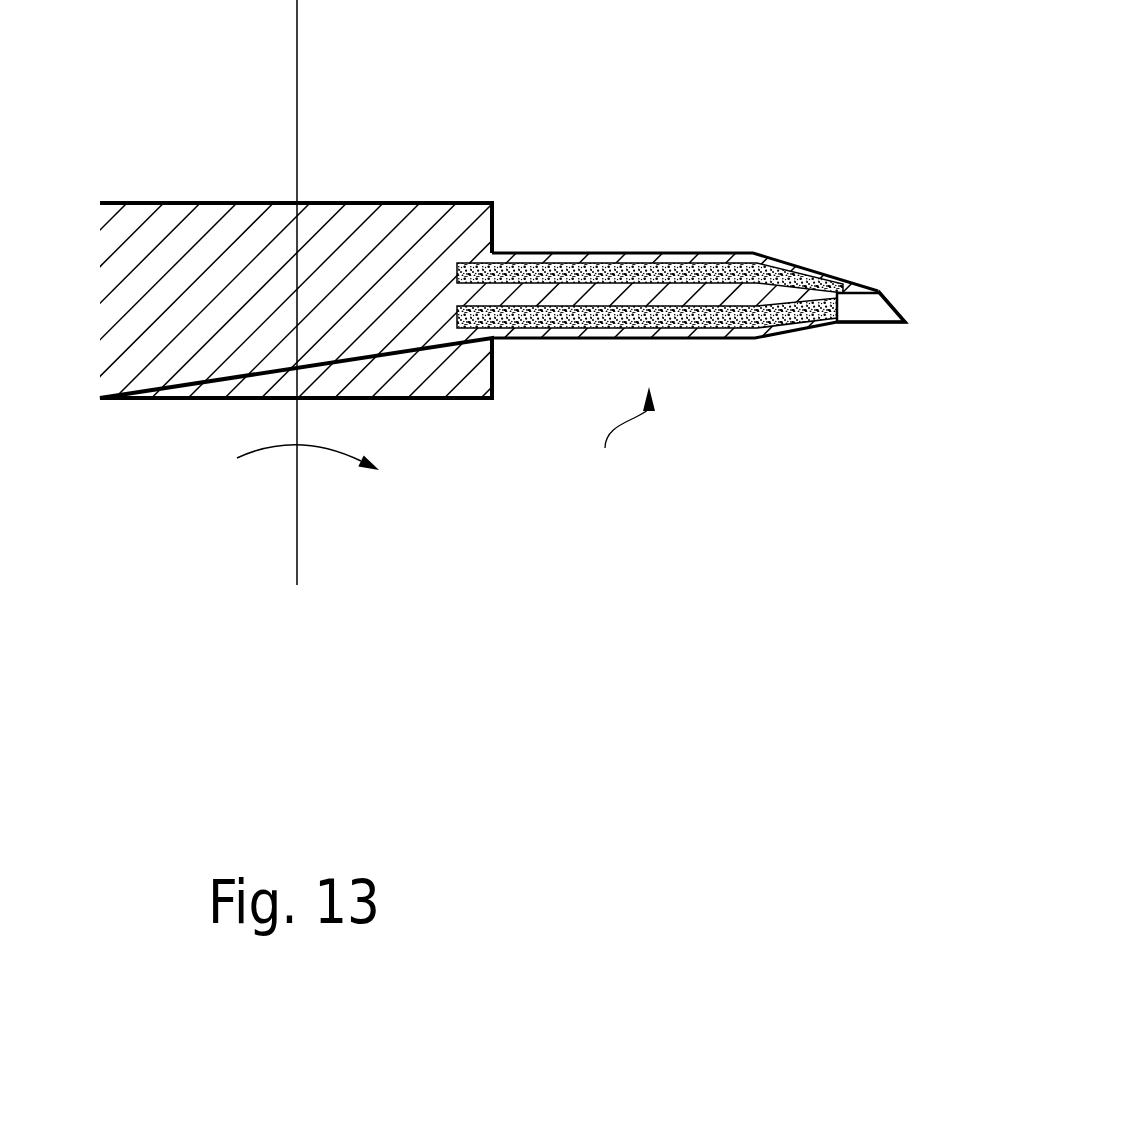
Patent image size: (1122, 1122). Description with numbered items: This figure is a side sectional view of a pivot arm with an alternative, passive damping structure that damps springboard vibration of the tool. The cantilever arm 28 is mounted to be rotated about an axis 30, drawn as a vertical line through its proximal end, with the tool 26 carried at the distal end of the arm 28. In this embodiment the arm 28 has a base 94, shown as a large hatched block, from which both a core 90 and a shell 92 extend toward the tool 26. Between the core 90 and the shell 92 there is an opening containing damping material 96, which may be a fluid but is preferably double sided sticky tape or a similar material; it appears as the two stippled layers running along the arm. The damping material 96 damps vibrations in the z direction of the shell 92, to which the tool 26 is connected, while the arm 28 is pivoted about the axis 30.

The axis 30 is at (297, 32).
The base 94 is at (342, 218).
The shell 92 is at (526, 255).
The damping material 96 is at (611, 288).
The core 90 is at (667, 251).
The tool 26 is at (868, 312).
The cantilever arm 28 is at (623, 437).